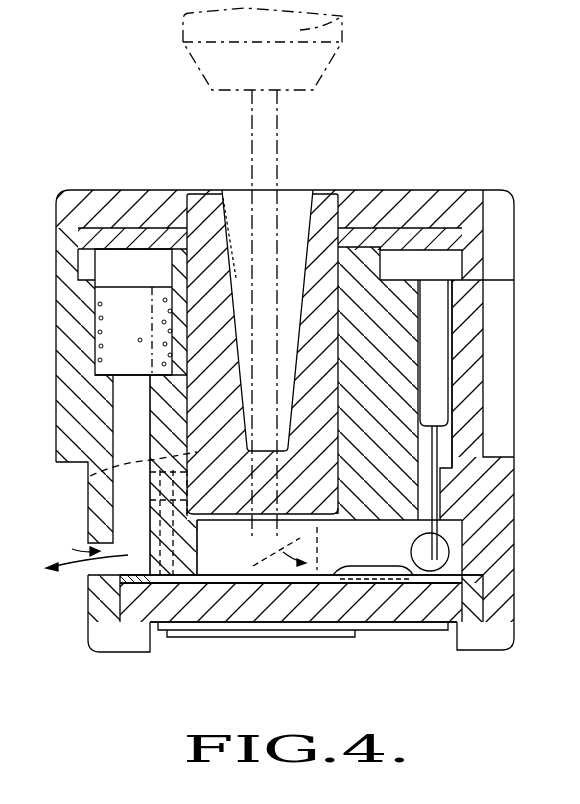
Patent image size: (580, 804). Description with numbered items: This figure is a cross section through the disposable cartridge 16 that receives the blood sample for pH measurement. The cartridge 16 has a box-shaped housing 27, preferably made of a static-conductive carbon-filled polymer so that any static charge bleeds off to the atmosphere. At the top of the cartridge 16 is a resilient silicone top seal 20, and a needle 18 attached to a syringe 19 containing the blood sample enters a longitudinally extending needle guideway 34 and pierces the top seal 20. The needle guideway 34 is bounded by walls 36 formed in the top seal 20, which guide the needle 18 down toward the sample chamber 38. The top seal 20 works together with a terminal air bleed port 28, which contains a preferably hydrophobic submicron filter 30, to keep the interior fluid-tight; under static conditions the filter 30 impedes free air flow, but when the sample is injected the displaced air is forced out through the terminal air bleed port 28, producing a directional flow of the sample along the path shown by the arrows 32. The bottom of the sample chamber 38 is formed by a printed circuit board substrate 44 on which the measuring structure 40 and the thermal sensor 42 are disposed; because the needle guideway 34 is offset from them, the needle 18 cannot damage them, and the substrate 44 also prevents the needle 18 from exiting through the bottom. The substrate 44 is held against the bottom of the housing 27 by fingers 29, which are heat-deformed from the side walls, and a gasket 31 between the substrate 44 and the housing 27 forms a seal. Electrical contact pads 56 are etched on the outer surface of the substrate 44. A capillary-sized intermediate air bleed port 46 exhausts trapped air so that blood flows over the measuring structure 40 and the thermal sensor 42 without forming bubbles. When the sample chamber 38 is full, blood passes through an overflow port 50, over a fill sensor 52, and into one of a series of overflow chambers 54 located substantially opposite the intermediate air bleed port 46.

The disposable cartridge 16 is at (521, 351).
The needle 18 is at (277, 143).
The syringe 19 is at (315, 62).
The top seal 20 is at (307, 212).
The box-shaped housing 27 is at (579, 527).
The terminal air bleed port 28 is at (76, 535).
The fingers 29 is at (253, 636).
The submicron filter 30 is at (142, 346).
The gasket 31 is at (147, 585).
The arrows 32 is at (132, 303).
The needle guideway 34 is at (240, 238).
The walls 36 is at (190, 395).
The sample chamber 38 is at (217, 565).
The measuring structure 40 is at (378, 592).
The thermal sensor 42 is at (440, 572).
The printed circuit board substrate 44 is at (227, 613).
The intermediate air bleed port 46 is at (440, 473).
The overflow port 50 is at (86, 482).
The fill sensor 52 is at (158, 498).
The overflow chambers 54 is at (440, 258).
The electrical contact pads 56 is at (305, 612).